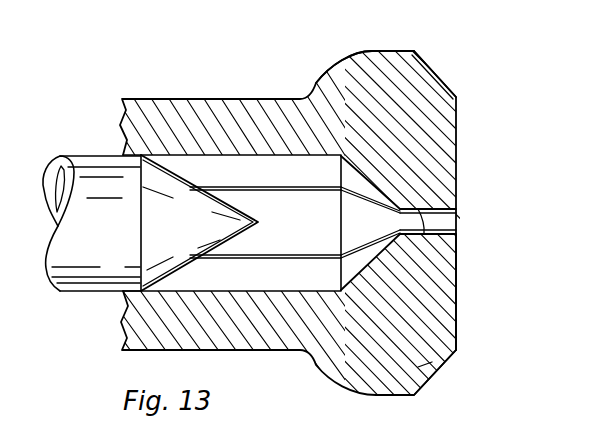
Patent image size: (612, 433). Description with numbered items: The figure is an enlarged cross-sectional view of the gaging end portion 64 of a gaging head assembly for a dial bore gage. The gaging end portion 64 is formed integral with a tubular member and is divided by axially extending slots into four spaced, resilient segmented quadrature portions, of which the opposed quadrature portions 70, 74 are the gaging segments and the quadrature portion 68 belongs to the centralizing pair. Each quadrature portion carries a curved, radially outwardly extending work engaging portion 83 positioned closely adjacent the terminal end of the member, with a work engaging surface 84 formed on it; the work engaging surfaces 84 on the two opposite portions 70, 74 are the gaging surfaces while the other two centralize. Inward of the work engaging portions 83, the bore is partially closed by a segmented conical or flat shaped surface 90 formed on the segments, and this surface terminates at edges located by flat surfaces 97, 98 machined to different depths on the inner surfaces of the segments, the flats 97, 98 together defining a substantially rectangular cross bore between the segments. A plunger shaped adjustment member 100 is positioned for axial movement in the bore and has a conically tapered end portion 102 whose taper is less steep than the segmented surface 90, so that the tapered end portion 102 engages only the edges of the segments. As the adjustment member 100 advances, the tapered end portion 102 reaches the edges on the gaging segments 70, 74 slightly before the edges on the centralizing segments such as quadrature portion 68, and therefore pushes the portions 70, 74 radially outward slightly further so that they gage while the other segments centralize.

The gaging end portion 64 is at (456, 143).
The quadrature portion 68 is at (457, 209).
The quadrature portion 70 is at (456, 97).
The quadrature portion 74 is at (457, 333).
The work engaging portion 83 is at (437, 366).
The work engaging surface 84 is at (390, 51).
The segmented conical or flat shaped surface 90 is at (366, 186).
The flat surface 97 is at (440, 223).
The flat surface 98 is at (456, 262).
The adjustment member 100 is at (95, 294).
The conically tapered end portion 102 is at (195, 184).